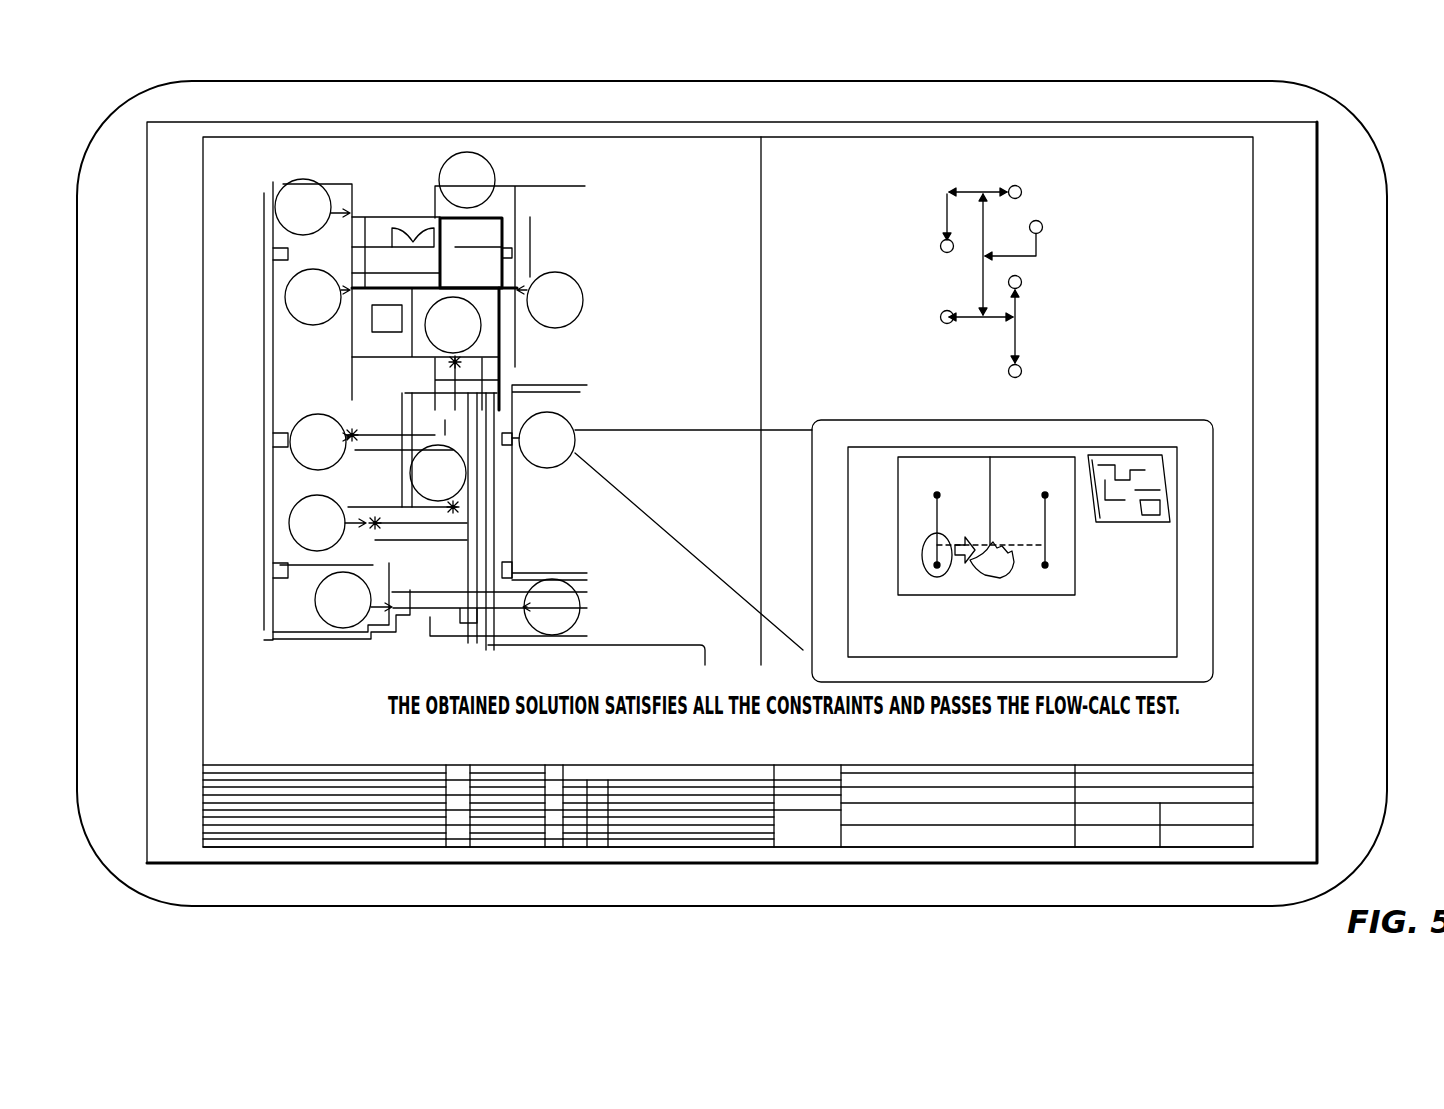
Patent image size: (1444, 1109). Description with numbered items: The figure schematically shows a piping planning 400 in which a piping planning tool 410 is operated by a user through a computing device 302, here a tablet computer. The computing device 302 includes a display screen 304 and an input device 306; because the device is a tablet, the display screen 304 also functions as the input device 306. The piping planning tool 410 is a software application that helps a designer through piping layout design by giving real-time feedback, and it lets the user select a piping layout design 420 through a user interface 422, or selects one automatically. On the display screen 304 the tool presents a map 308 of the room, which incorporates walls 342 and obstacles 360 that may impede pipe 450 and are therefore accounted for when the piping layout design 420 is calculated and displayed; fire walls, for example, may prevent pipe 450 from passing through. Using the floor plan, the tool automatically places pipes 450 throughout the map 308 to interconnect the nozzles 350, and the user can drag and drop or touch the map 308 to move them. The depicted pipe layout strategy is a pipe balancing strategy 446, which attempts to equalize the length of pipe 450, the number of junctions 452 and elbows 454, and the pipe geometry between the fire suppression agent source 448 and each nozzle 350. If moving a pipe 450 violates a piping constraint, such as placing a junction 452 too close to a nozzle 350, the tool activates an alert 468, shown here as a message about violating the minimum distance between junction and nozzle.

The computing device 302 is at (1313, 93).
The display screen 304 is at (1133, 150).
The input device 306 is at (1003, 150).
The map 308 is at (263, 270).
The wall 342 is at (303, 628).
The nozzle 350 is at (577, 302).
The obstacle 360 is at (373, 313).
The piping planning 400 is at (88, 117).
The piping planning tool 410 is at (272, 152).
The piping layout design 420 is at (520, 177).
The user interface 422 is at (652, 137).
The pipe balancing strategy 446 is at (877, 230).
The fire suppression agent source 448 is at (1037, 221).
The pipe 450 is at (1020, 258).
The junction 452 is at (983, 192).
The elbow 454 is at (1040, 250).
The alert 468 is at (1150, 420).